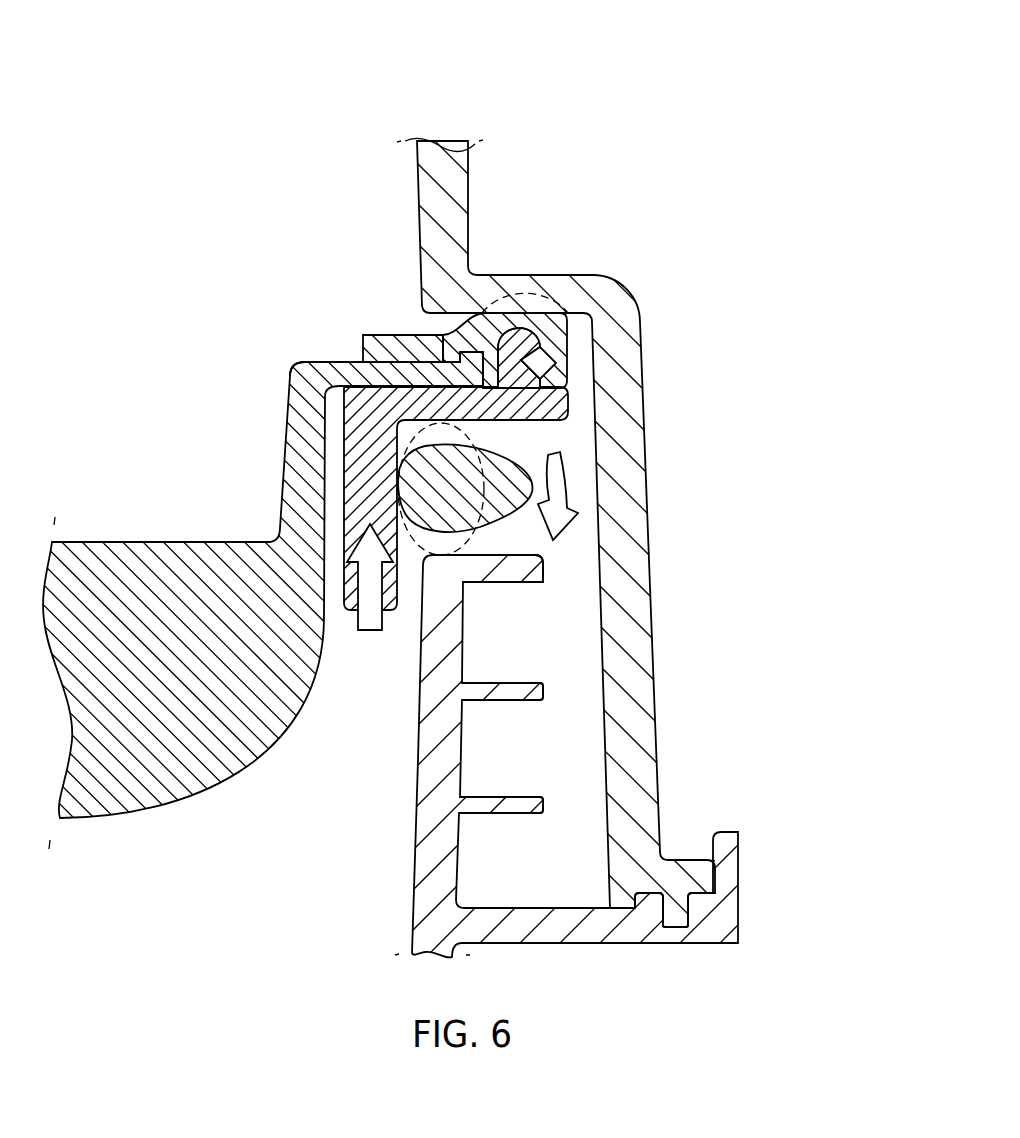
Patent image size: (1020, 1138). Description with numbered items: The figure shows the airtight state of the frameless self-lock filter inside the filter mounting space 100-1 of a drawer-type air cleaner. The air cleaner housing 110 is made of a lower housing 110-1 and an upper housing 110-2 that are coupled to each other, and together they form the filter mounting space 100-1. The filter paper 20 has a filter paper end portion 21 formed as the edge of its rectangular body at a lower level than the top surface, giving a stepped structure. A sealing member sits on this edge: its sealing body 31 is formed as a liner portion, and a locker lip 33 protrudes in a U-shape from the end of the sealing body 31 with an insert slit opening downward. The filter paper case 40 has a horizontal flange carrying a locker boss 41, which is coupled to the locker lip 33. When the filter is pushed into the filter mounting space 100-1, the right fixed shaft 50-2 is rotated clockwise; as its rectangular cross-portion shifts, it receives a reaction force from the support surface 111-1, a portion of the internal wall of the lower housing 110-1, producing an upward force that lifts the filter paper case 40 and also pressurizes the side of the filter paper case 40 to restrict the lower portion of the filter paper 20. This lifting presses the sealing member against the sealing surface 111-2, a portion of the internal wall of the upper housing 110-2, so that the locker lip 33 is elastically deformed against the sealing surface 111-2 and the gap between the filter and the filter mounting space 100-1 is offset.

The filter mounting space 100-1 is at (130, 172).
The filter paper 20 is at (489, 537).
The filter paper end portion 21 is at (360, 373).
The sealing body 31 is at (393, 342).
The locker lip 33 is at (553, 325).
The filter paper case 40 is at (372, 487).
The locker boss 41 is at (517, 345).
The right fixed shaft 50-2 is at (515, 485).
The air cleaner housing 110 is at (809, 700).
The lower housing 110-1 is at (565, 756).
The upper housing 110-2 is at (510, 475).
The support surface 111-1 is at (452, 628).
The sealing surface 111-2 is at (527, 275).